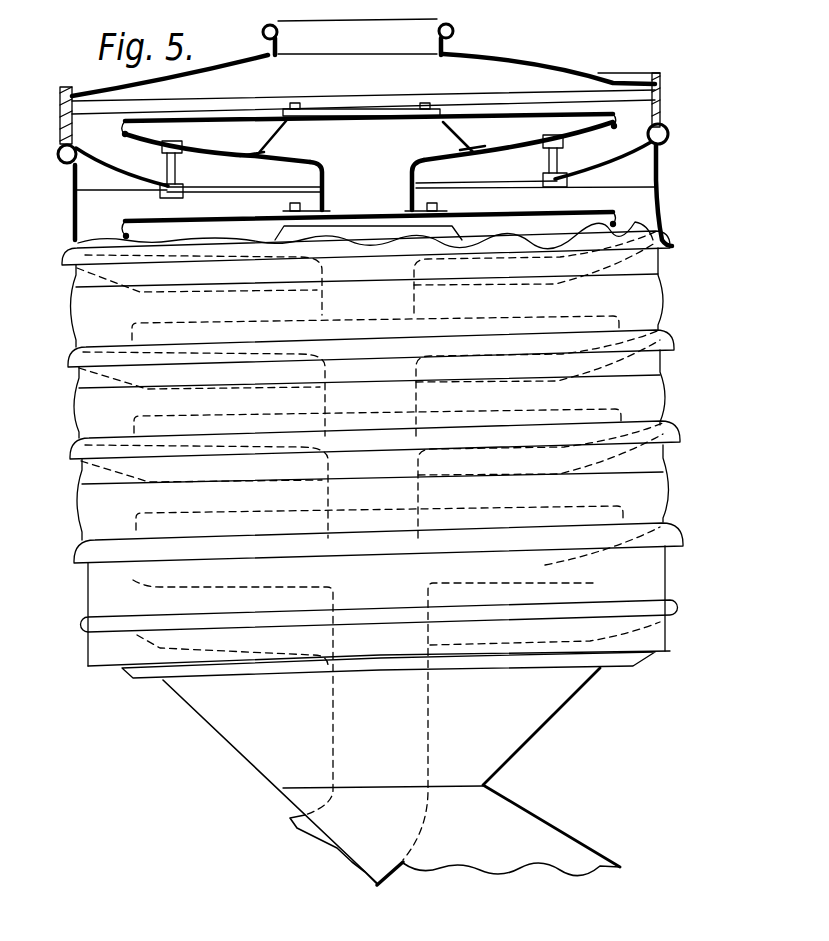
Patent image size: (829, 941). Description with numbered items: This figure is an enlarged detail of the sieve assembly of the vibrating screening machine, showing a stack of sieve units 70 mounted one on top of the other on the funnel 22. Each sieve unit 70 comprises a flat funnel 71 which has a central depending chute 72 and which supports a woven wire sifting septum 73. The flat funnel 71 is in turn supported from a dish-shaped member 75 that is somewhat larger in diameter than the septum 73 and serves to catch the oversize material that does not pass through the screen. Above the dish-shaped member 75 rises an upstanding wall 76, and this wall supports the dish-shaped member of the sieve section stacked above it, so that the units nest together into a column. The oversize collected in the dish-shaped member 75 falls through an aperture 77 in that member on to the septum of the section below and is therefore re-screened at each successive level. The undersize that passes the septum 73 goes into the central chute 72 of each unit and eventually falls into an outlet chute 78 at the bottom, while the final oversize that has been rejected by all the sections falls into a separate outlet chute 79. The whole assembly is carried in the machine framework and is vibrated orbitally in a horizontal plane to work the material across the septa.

The funnel 22 is at (267, 740).
The sieve unit 70 is at (74, 178).
The flat funnel 71 is at (213, 157).
The central depending chute 72 is at (328, 197).
The woven wire sifting septum 73 is at (488, 115).
The dish-shaped member 75 is at (637, 140).
The upstanding wall 76 is at (653, 125).
The aperture 77 is at (443, 181).
The outlet chute 78 is at (288, 820).
The separate outlet chute 79 is at (527, 807).